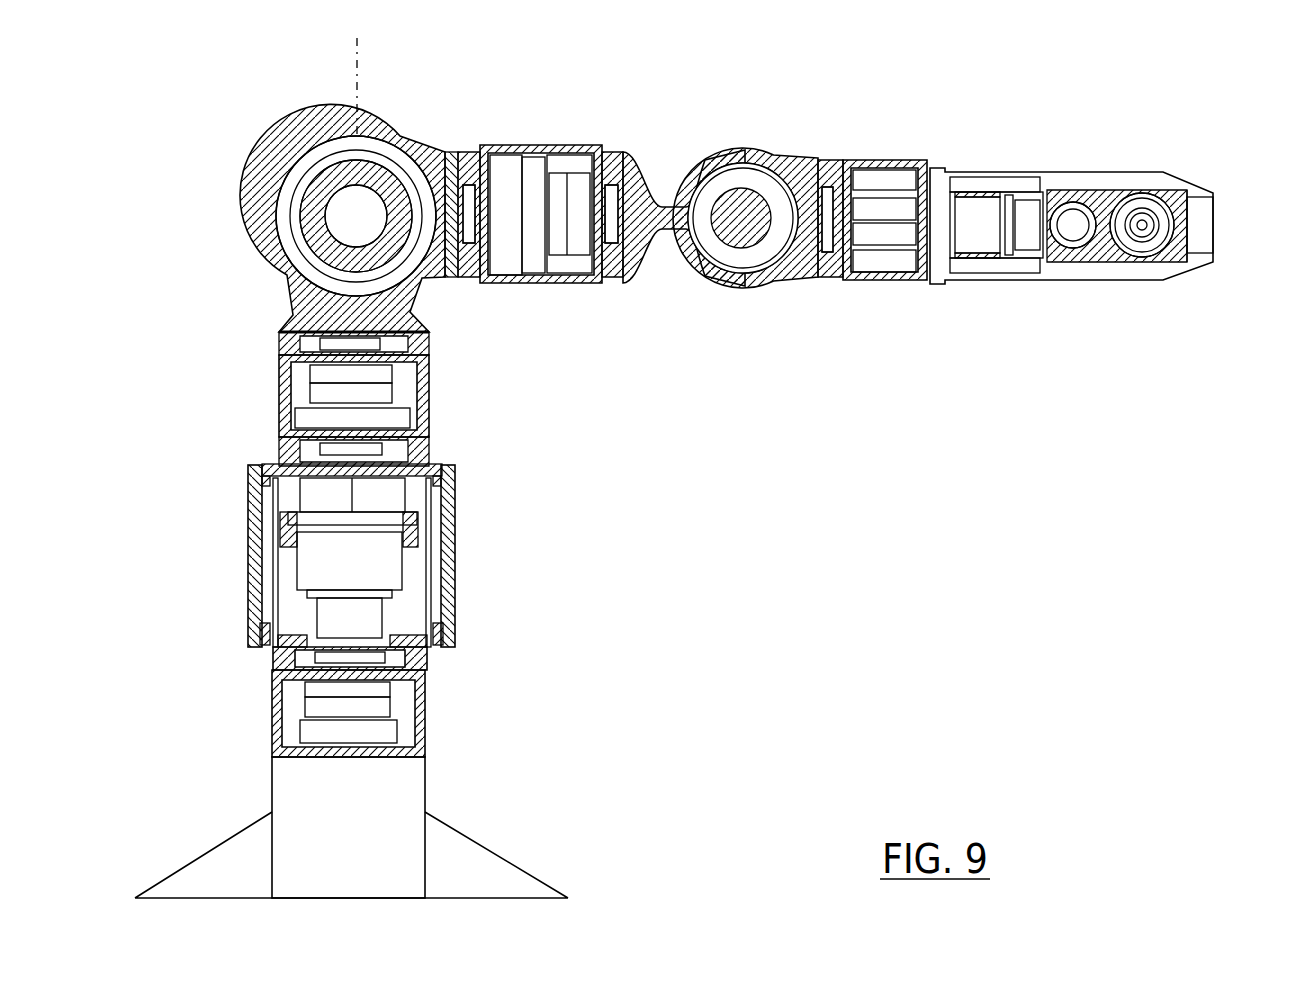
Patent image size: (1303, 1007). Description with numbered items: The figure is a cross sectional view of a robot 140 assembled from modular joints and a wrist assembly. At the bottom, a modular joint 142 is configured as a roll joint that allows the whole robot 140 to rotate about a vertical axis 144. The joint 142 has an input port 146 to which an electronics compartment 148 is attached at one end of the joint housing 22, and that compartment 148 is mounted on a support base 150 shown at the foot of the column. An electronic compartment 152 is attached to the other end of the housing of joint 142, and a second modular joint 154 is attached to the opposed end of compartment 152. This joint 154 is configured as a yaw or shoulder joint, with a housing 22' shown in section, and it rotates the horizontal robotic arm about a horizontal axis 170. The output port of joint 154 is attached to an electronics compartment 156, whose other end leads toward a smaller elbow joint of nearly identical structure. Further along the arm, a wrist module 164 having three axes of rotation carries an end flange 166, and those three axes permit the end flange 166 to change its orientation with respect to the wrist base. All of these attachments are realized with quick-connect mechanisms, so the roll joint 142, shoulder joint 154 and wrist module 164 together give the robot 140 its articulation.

The joint housing 22' is at (342, 208).
The vertical axis 144 is at (358, 93).
The second modular joint 154 is at (410, 142).
The horizontal axis 170 is at (365, 230).
The electronics compartment 156 is at (570, 145).
The support base 150 is at (762, 148).
The wrist module 164 is at (1040, 172).
The robot 140 is at (1111, 137).
The end flange 166 is at (1220, 245).
The electronic compartment 152 is at (430, 408).
The joint housing 22 is at (384, 555).
The modular joint 142 is at (248, 538).
The input port 146 is at (428, 660).
The electronics compartment 148 is at (420, 730).